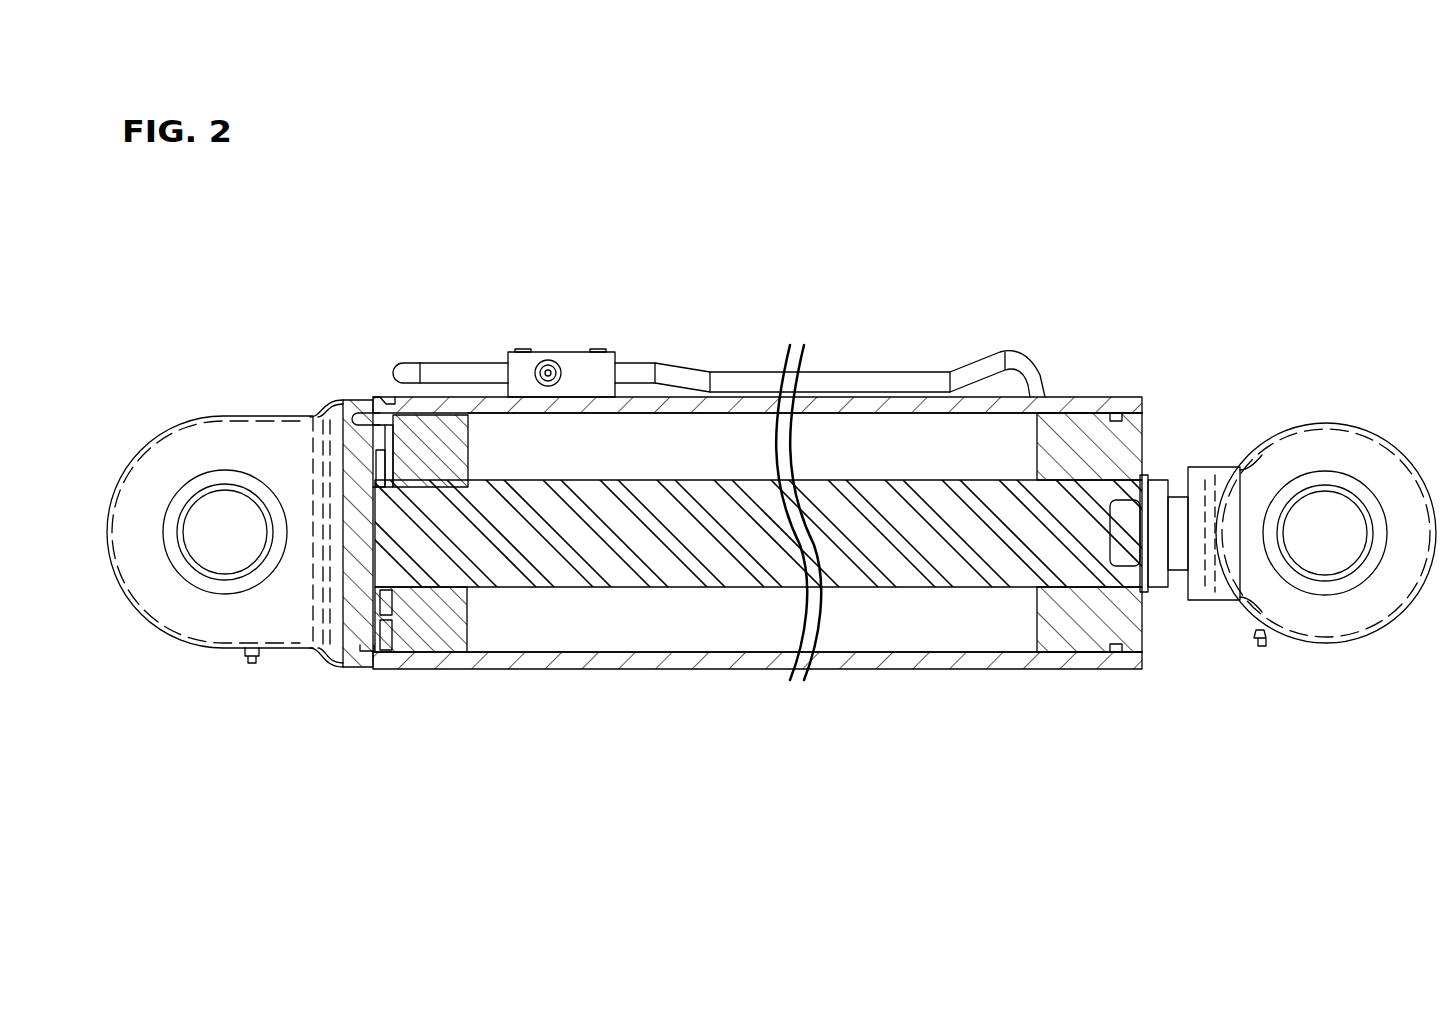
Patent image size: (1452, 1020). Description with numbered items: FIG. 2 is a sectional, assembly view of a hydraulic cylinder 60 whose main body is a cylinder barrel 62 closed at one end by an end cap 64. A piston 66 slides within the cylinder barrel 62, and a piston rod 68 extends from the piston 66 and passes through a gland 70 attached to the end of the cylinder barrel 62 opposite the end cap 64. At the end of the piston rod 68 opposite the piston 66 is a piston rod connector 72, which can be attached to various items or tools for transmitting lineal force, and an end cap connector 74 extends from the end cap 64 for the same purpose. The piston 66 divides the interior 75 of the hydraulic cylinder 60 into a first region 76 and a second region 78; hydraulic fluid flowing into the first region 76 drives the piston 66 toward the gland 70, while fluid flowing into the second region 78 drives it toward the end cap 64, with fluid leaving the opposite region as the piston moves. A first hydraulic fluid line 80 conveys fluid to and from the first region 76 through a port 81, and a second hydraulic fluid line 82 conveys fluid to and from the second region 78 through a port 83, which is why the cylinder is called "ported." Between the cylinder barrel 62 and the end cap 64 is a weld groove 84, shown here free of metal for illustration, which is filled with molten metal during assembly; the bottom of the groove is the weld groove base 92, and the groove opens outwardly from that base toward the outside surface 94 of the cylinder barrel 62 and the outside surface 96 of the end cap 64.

The hydraulic cylinder 60 is at (891, 242).
The cylinder barrel 62 is at (931, 662).
The end cap 64 is at (352, 597).
The piston 66 is at (450, 452).
The piston rod 68 is at (690, 505).
The gland 70 is at (1100, 432).
The piston rod connector 72 is at (1353, 445).
The end cap connector 74 is at (150, 578).
The interior 75 is at (865, 430).
The first region 76 is at (383, 440).
The second region 78 is at (672, 430).
The first hydraulic fluid line 80 is at (475, 372).
The port 81 is at (402, 397).
The second hydraulic fluid line 82 is at (987, 367).
The port 83 is at (1043, 395).
The weld groove 84 is at (378, 672).
The weld groove base 92 is at (512, 655).
The outside surface 94 is at (364, 648).
The outside surface 96 is at (368, 620).